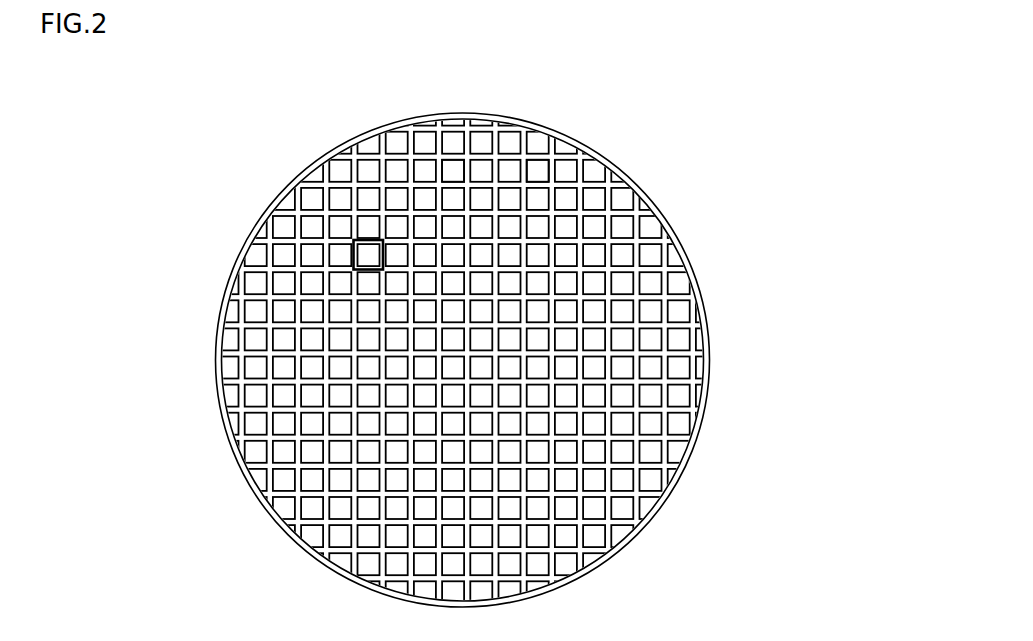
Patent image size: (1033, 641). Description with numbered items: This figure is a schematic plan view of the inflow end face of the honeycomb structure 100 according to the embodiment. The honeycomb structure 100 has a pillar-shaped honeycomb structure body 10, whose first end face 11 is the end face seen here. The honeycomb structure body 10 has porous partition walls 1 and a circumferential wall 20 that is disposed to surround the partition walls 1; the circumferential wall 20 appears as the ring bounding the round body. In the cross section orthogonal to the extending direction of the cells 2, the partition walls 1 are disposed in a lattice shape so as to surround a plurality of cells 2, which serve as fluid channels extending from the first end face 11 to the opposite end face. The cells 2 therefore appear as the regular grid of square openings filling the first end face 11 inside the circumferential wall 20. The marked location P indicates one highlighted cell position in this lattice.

The honeycomb structure 100 is at (797, 116).
The honeycomb structure body 10 is at (720, 370).
The circumferential wall 20 is at (653, 517).
The first end face 11 is at (287, 188).
The partition walls 1 is at (439, 165).
The cells 2 is at (538, 172).
The inspection position P is at (353, 256).